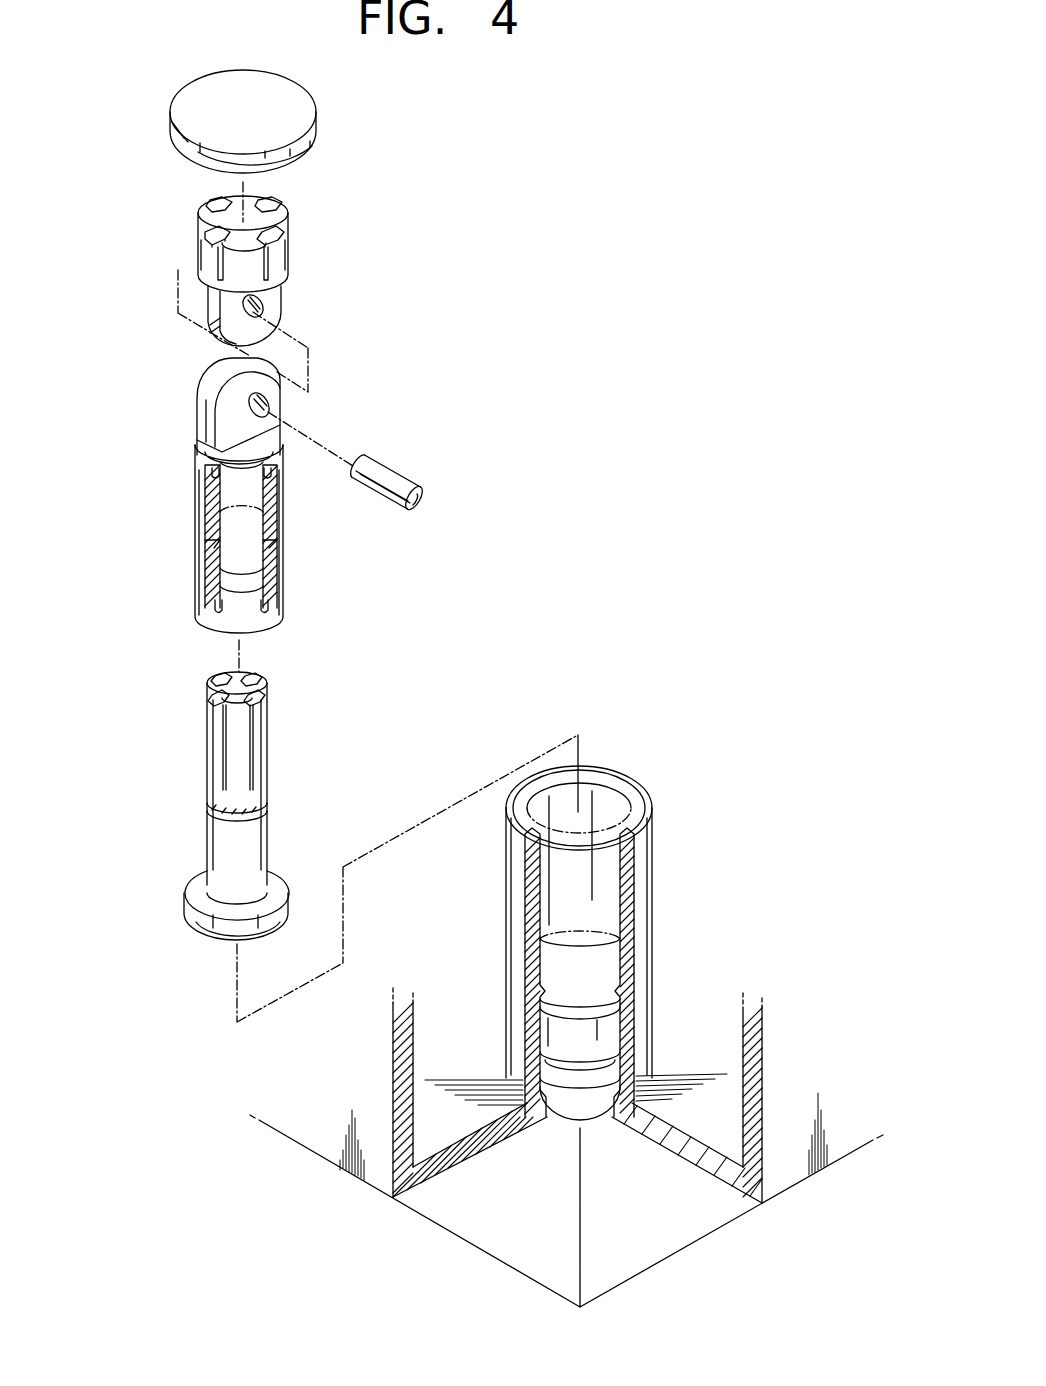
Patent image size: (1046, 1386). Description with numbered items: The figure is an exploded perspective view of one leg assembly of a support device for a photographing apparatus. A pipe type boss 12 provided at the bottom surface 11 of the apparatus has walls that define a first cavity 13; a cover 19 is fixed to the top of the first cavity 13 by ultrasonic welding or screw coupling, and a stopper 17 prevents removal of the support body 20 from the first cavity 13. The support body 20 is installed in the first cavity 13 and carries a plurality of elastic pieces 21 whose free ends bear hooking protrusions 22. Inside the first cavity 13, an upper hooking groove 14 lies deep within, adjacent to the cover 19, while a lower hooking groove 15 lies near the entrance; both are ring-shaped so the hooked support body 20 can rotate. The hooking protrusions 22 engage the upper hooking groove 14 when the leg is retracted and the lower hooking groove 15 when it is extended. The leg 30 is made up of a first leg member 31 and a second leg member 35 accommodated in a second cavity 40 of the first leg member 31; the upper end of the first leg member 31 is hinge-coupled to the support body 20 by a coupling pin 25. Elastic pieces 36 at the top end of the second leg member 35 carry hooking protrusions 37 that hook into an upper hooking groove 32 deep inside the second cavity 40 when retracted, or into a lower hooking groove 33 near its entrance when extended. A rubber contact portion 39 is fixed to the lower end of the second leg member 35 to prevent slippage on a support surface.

The bottom surface 11 is at (727, 1187).
The pipe type boss 12 is at (585, 971).
The first cavity 13 is at (560, 957).
The upper hooking groove 14 is at (632, 821).
The lower hooking groove 15 is at (633, 1067).
The stopper 17 is at (542, 1110).
The cover 19 is at (293, 98).
The support body 20 is at (277, 257).
The elastic pieces 21 is at (205, 268).
The hooking protrusions 22 is at (203, 240).
The coupling pin 25 is at (397, 476).
The leg 30 is at (433, 615).
The first leg member 31 is at (280, 505).
The upper hooking groove 32 is at (220, 481).
The lower hooking groove 33 is at (274, 624).
The second leg member 35 is at (273, 806).
The elastic pieces 36 is at (212, 727).
The hooking protrusions 37 is at (210, 702).
The contact portion 39 is at (190, 905).
The second cavity 40 is at (233, 557).